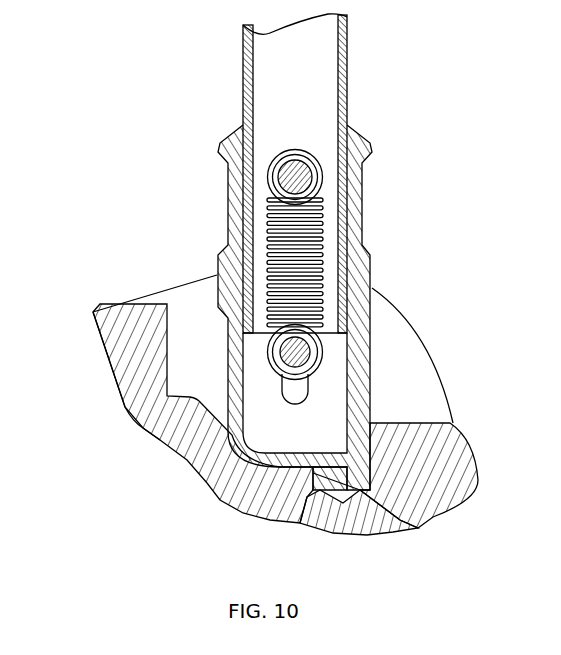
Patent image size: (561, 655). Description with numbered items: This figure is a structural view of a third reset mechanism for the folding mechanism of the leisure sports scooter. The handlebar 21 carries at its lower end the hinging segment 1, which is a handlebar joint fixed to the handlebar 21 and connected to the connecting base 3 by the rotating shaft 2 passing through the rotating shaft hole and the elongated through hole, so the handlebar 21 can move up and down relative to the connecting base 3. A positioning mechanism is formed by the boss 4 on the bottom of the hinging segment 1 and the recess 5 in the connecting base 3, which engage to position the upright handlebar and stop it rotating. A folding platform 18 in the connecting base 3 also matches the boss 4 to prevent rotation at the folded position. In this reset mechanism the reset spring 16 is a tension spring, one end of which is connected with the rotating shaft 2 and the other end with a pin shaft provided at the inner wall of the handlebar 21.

The handlebar 21 is at (345, 98).
The hinging segment 1 is at (348, 249).
The reset spring 16 is at (297, 297).
The rotating shaft 2 is at (325, 334).
The folding platform 18 is at (132, 418).
The connecting base 3 is at (158, 432).
The boss 4 is at (340, 490).
The recess 5 is at (360, 490).